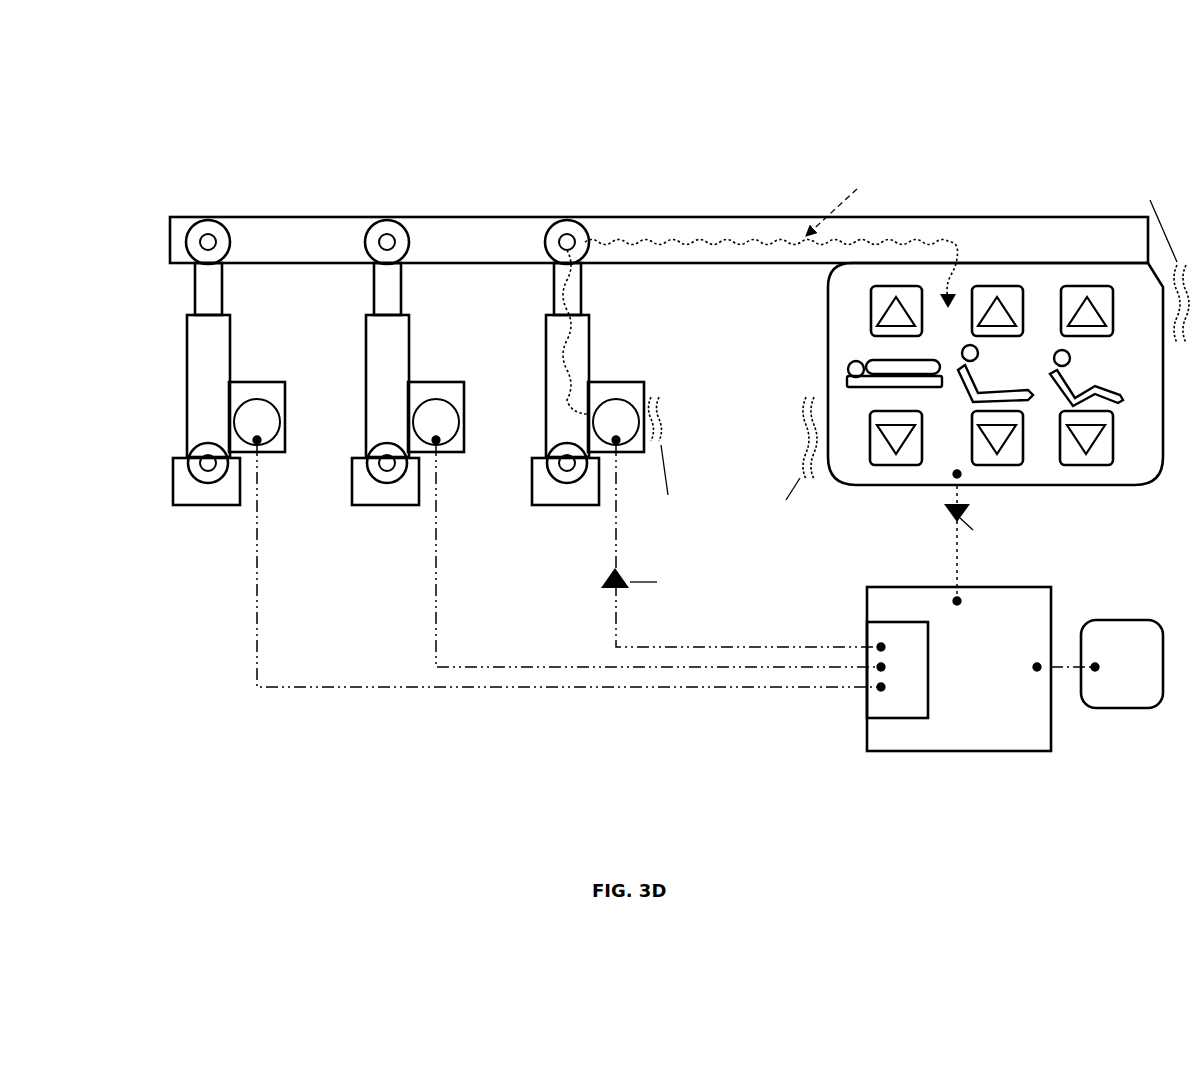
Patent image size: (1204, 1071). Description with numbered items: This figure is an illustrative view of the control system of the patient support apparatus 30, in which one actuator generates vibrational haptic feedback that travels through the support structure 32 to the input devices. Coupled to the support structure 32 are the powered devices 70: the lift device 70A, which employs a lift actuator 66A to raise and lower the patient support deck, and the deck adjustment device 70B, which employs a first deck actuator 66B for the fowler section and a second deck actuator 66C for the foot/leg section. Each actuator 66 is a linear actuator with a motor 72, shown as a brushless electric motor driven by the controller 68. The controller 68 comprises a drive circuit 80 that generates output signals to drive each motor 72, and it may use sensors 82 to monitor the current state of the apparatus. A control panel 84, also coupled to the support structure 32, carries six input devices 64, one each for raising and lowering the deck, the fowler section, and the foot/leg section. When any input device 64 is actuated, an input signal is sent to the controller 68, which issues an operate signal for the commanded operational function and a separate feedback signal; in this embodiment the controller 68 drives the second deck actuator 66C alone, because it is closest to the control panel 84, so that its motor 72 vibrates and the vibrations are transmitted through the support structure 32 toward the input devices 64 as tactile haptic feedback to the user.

The patient support apparatus 30 is at (890, 112).
The support structure 32 is at (716, 213).
The input device 64 is at (871, 316).
The actuator 66 is at (357, 377).
The lift actuator 66A is at (185, 392).
The first deck actuator 66B is at (364, 392).
The second deck actuator 66C is at (544, 392).
The controller 68 is at (959, 669).
The powered devices 70 is at (382, 196).
The lift device 70A is at (237, 198).
The deck adjustment device 70B is at (562, 198).
The motor 72 is at (258, 394).
The drive circuit 80 is at (897, 670).
The sensors 82 is at (1122, 664).
The control panel 84 is at (1043, 489).